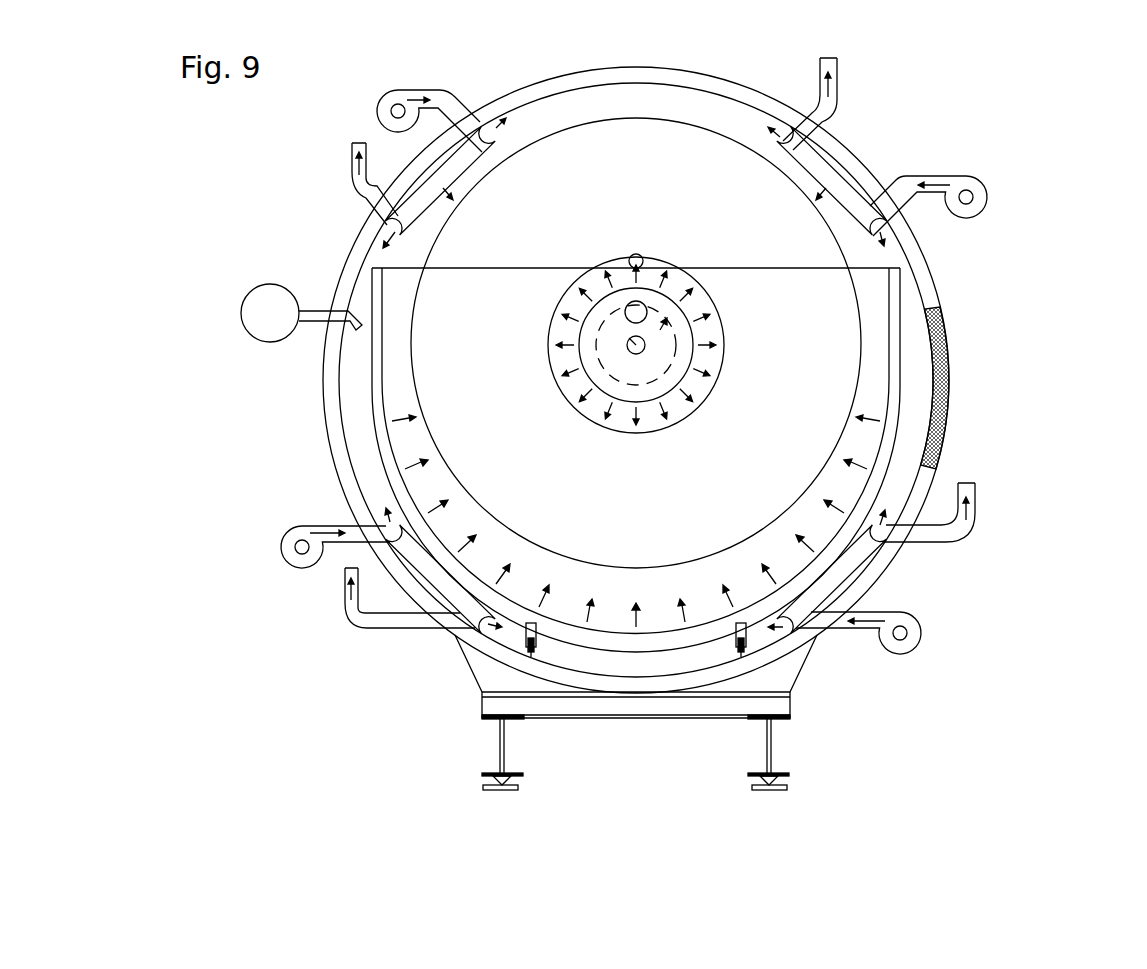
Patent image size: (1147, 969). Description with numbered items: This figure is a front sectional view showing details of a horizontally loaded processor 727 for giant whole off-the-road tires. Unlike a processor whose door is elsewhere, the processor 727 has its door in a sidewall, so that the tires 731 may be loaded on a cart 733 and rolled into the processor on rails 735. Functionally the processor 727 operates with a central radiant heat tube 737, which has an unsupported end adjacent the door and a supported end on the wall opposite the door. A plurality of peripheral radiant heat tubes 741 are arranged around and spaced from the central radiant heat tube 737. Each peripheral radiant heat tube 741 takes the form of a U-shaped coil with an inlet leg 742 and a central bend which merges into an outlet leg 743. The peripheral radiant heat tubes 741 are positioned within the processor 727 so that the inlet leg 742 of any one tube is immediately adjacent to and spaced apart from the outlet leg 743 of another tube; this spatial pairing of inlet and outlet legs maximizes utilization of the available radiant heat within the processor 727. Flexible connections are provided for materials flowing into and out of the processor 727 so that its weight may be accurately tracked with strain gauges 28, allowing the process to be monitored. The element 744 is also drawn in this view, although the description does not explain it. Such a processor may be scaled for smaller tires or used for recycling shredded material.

The horizontally loaded processor 727 is at (980, 115).
The tires 731 is at (595, 563).
The cart 733 is at (893, 347).
The rails 735 is at (740, 656).
The central radiant heat tube 737 is at (636, 254).
The peripheral radiant heat tubes 741 is at (438, 177).
The inlet leg 742 is at (452, 100).
The outlet leg 743 is at (372, 202).
The filter screen 744 is at (940, 412).
The strain gauges 28 is at (760, 782).